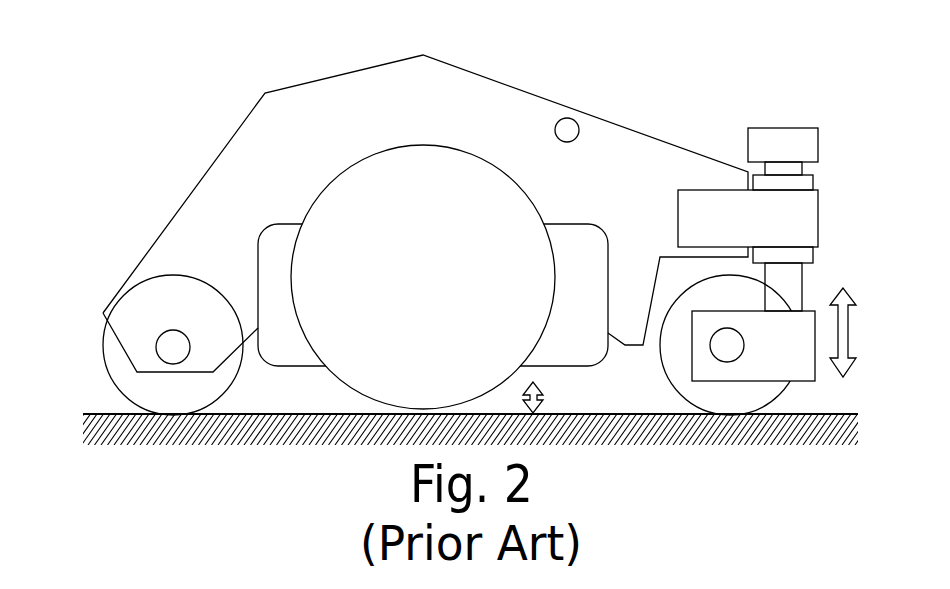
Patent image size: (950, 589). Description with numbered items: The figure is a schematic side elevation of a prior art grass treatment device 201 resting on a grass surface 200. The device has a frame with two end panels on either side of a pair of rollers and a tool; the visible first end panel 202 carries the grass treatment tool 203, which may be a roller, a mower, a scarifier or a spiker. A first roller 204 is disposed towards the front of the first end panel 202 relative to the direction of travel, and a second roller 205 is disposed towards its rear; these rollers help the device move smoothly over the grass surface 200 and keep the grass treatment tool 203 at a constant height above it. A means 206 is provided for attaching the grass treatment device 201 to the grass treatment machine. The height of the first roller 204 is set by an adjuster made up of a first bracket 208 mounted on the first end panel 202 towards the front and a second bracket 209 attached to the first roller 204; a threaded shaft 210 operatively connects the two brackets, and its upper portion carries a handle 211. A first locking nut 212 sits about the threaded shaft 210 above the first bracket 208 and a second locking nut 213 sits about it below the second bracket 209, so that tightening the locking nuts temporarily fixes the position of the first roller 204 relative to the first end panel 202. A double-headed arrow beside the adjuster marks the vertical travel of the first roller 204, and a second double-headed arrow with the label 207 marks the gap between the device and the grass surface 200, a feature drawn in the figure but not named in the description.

The grass surface 200 is at (215, 415).
The grass treatment device 201 is at (425, 197).
The first end panel 202 is at (525, 98).
The grass treatment tool 203 is at (370, 173).
The first roller 204 is at (770, 400).
The second roller 205 is at (110, 360).
The means to attach 206 is at (567, 119).
The ground clearance 207 is at (540, 400).
The first bracket 208 is at (818, 225).
The second bracket 209 is at (815, 368).
The threaded shaft 210 is at (802, 295).
The handle 211 is at (818, 150).
The first locking nut 212 is at (813, 180).
The second locking nut 213 is at (813, 255).